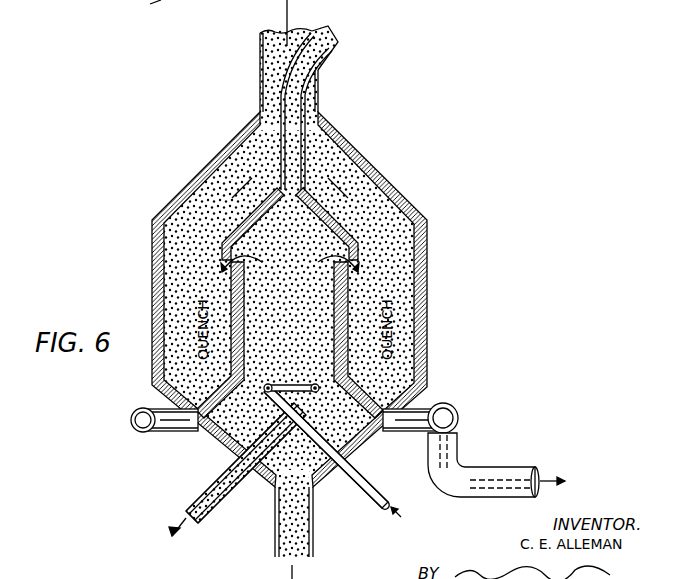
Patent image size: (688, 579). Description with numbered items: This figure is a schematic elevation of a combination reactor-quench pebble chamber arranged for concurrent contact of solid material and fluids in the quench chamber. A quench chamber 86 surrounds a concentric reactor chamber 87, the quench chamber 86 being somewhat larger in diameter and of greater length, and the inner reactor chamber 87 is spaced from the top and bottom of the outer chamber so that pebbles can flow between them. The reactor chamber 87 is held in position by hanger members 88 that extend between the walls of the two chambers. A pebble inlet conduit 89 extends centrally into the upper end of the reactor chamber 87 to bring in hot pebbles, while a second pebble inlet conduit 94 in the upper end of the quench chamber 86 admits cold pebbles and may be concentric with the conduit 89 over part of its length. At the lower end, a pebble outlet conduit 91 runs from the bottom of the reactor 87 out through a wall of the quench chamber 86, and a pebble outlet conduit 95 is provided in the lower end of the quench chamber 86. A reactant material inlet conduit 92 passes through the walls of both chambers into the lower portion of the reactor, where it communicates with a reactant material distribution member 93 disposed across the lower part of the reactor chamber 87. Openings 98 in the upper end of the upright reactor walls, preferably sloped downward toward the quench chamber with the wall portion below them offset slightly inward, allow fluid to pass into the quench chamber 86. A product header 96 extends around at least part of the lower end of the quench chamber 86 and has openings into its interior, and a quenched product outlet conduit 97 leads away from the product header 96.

The quench chamber 86 is at (428, 269).
The reactor chamber 87 is at (346, 326).
The hanger members 88 is at (293, 219).
The pebble inlet conduit 89 is at (325, 55).
The pebble outlet conduit 91 is at (212, 512).
The reactant material inlet conduit 92 is at (364, 485).
The reactant material distribution member 93 is at (304, 383).
The pebble inlet conduit 94 is at (259, 52).
The pebble outlet conduit 95 is at (313, 540).
The product header 96 is at (440, 405).
The quenched product outlet conduit 97 is at (458, 457).
The openings 98 is at (238, 262).